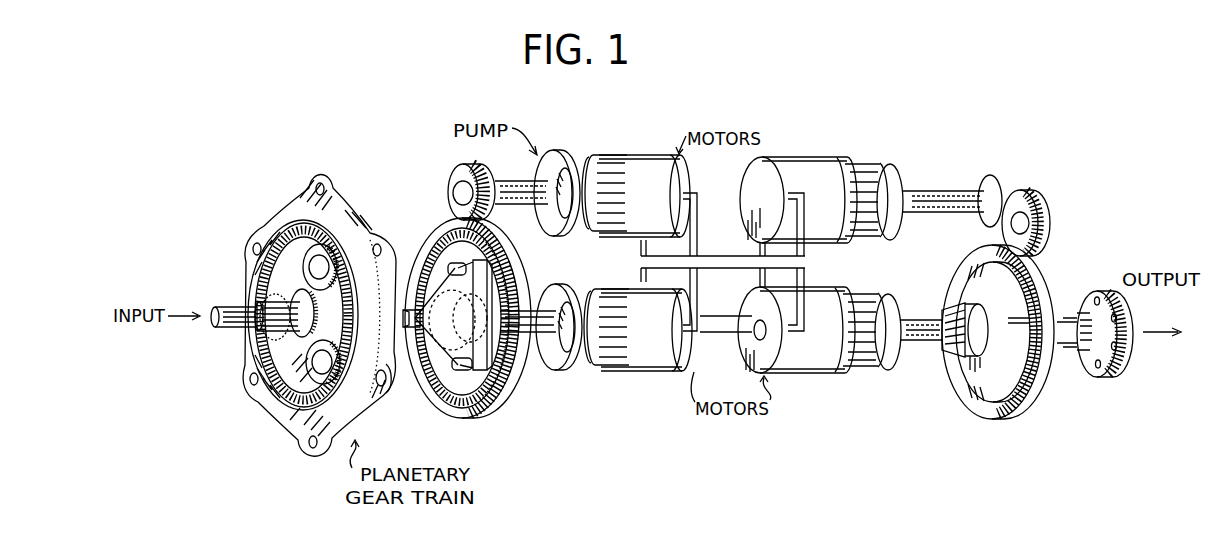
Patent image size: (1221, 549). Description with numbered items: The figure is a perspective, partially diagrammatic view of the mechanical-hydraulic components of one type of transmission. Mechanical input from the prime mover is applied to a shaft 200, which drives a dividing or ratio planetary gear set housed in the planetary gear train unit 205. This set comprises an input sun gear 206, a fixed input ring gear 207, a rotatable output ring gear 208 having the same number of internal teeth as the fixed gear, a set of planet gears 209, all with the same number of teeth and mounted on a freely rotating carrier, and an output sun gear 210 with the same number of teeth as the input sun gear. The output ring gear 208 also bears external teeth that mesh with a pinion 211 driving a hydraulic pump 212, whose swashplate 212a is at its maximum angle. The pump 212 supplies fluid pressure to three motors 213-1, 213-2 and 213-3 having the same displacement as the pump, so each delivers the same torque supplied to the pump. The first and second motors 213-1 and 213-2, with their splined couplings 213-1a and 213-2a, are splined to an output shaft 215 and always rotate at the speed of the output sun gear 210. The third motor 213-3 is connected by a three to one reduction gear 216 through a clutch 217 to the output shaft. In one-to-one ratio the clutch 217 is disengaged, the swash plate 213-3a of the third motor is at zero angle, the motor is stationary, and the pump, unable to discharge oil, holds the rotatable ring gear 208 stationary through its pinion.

The shaft 200 is at (236, 306).
The planetary gear train housing 205 is at (297, 183).
The input sun gear 206 is at (266, 333).
The fixed input ring gear 207 is at (279, 250).
The rotatable output ring gear 208 is at (458, 410).
The planet gears 209 is at (312, 370).
The output sun gear 210 is at (502, 362).
The pinion 211 is at (449, 192).
The hydraulic pump 212 is at (653, 154).
The pump swashplate 212a is at (578, 130).
The first motor 213-1 is at (656, 354).
The motor flange 213-1a is at (573, 370).
The second motor 213-2 is at (775, 356).
The motor splined coupling 213-2a is at (882, 362).
The third motor 213-3 is at (803, 160).
The swash plate 213-3a is at (876, 165).
The output shaft 215 is at (918, 324).
The reduction gear 216 is at (1038, 200).
The clutch 217 is at (975, 380).